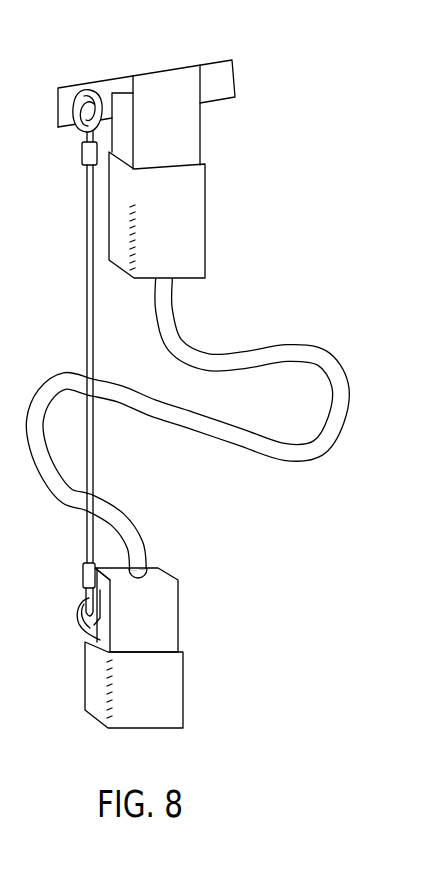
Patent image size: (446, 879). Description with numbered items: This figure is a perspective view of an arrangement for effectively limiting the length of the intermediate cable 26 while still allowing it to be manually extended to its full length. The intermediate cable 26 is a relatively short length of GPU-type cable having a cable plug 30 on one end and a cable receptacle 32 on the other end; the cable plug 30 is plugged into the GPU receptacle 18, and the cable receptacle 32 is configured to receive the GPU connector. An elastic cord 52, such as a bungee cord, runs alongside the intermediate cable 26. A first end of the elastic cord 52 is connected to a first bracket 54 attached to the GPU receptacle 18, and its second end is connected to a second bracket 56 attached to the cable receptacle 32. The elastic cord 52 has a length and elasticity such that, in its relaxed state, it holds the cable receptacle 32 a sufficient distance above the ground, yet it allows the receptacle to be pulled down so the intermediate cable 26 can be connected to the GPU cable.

The GPU receptacle 18 is at (230, 79).
The intermediate cable 26 is at (331, 356).
The cable plug 30 is at (198, 217).
The cable receptacle 32 is at (173, 694).
The elastic cord 52 is at (85, 296).
The first bracket 54 is at (72, 108).
The second bracket 56 is at (94, 626).